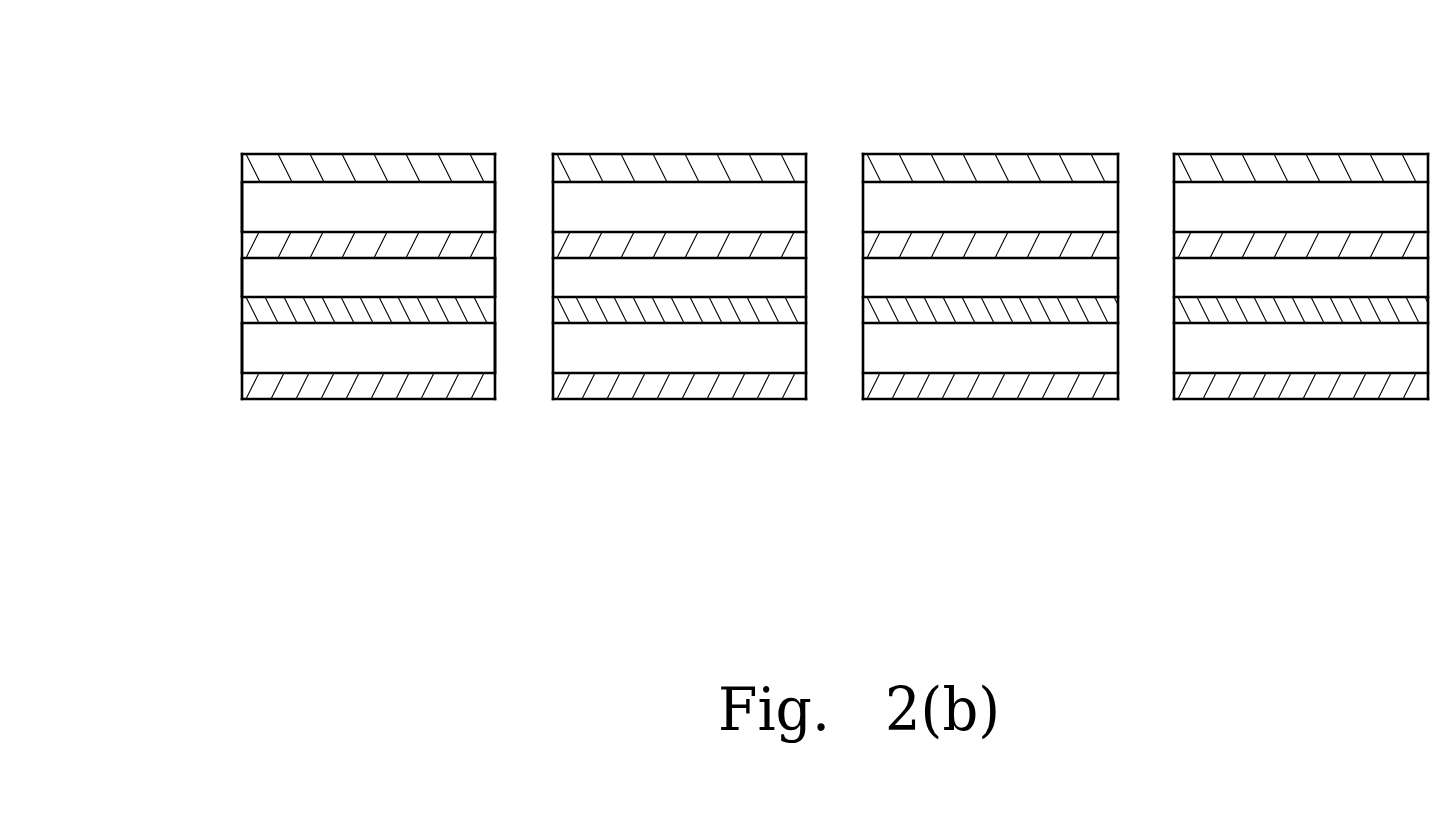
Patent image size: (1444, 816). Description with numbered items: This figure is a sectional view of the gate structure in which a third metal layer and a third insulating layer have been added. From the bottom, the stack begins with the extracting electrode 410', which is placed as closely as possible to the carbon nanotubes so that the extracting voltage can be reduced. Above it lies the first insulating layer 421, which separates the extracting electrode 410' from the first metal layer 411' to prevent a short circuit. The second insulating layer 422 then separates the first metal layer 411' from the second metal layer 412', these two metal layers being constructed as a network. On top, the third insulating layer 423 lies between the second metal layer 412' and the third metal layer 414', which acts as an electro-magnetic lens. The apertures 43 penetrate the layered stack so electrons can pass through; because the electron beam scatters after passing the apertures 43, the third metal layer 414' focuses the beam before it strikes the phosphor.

The third metal layer 414' is at (749, 153).
The second metal layer 412' is at (749, 231).
The first metal layer 411' is at (749, 295).
The extracting electrode 410' is at (749, 370).
The third insulating layer 423 is at (470, 203).
The second insulating layer 422 is at (470, 278).
The first insulating layer 421 is at (478, 357).
The apertures 43 is at (830, 200).